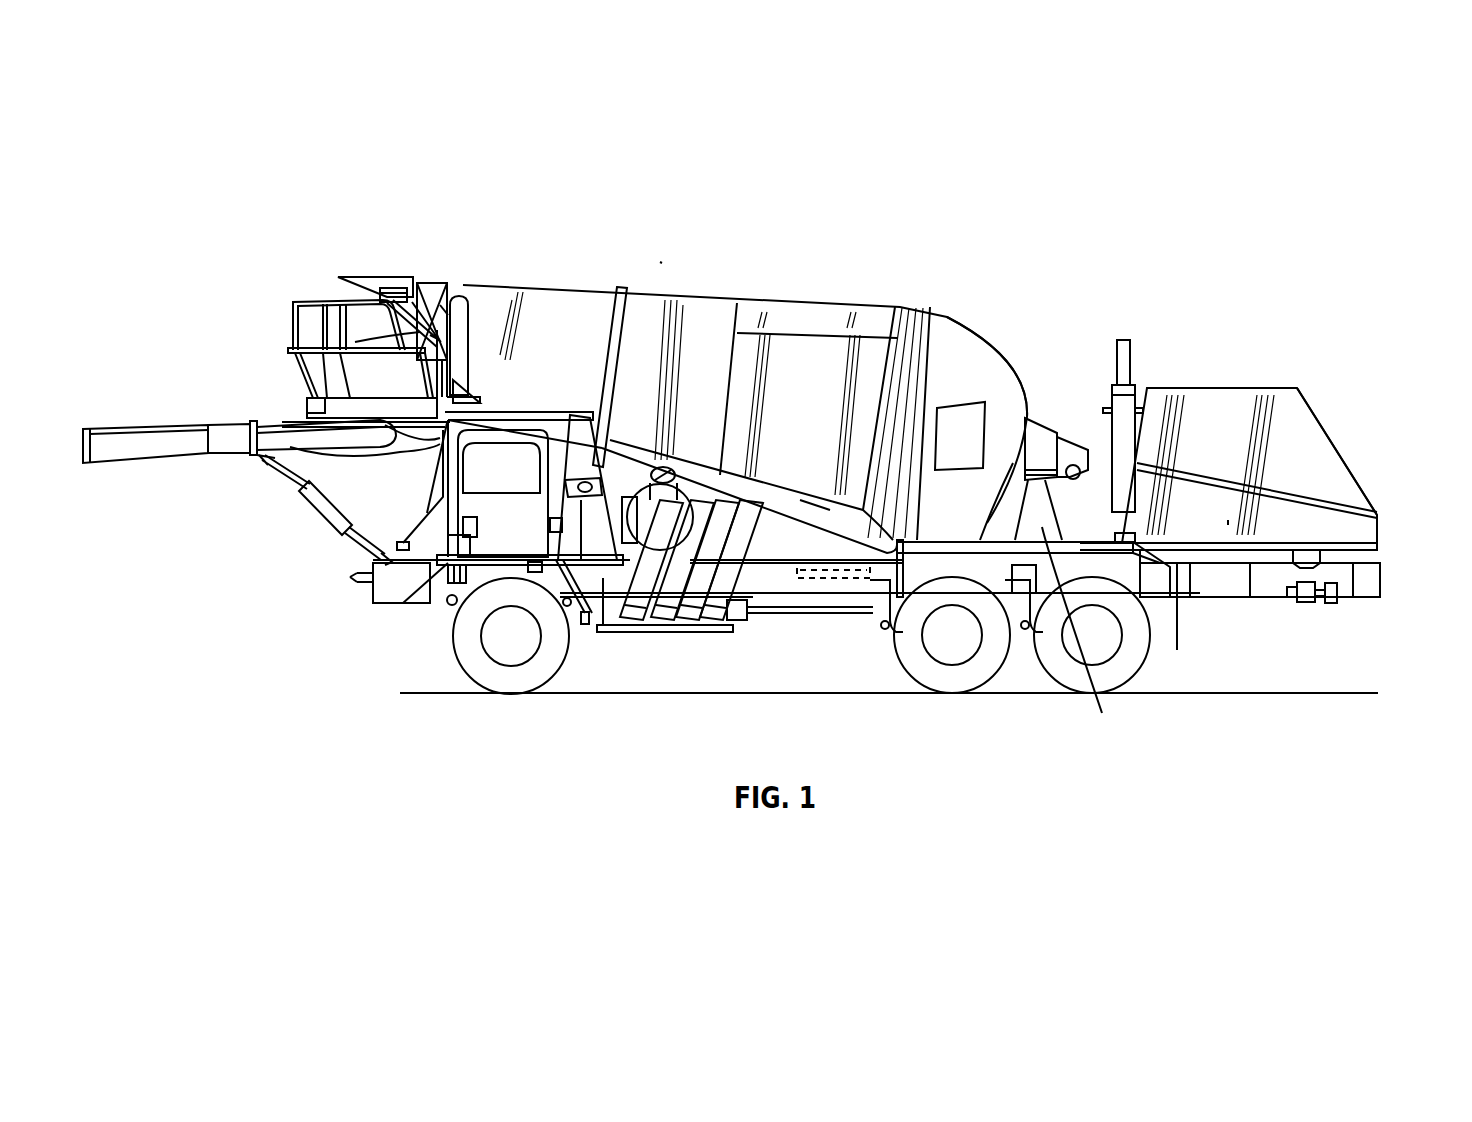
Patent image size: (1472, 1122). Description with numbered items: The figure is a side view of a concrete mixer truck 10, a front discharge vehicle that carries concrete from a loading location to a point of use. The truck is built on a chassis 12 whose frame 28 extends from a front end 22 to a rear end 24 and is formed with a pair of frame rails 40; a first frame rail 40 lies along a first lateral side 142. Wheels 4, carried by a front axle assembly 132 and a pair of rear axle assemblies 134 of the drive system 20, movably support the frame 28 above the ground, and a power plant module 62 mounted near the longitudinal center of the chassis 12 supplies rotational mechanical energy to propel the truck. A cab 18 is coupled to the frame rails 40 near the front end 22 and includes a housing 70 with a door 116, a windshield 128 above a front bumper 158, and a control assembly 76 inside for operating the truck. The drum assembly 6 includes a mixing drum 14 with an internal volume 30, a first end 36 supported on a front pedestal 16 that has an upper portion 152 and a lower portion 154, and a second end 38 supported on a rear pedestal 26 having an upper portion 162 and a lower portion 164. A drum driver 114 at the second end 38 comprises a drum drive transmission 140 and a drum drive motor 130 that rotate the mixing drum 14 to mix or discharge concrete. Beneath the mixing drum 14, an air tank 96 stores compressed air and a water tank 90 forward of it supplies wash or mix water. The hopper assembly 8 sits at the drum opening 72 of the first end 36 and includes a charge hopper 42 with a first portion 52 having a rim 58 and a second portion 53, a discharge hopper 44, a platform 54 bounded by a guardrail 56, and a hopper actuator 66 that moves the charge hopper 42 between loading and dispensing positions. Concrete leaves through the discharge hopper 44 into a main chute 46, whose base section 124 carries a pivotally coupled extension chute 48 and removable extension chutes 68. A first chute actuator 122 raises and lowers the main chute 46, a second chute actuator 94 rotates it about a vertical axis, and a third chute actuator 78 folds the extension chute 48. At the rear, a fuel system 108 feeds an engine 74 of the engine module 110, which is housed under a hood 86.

The wheels 4 is at (475, 655).
The drum assembly 6 is at (660, 262).
The hopper assembly 8 is at (290, 278).
The concrete mixer truck 10 is at (942, 280).
The chassis 12 is at (860, 597).
The mixing drum 14 is at (718, 302).
The front pedestal 16 is at (602, 450).
The cab 18 is at (455, 532).
The drive system 20 is at (745, 622).
The front end 22 is at (355, 580).
The rear end 24 is at (1385, 572).
The rear pedestal 26 is at (1081, 633).
The frame 28 is at (830, 590).
The internal volume 30 is at (797, 352).
The first end 36 is at (446, 278).
The second end 38 is at (1023, 368).
The frame rails 40 is at (1193, 583).
The charge hopper 42 is at (410, 278).
The discharge hopper 44 is at (300, 350).
The main chute 46 is at (305, 448).
The extension chute 48 is at (141, 452).
The first portion 52 is at (390, 286).
The second portion 53 is at (413, 333).
The platform 54 is at (322, 412).
The guardrail 56 is at (300, 366).
The rim 58 is at (363, 278).
The power plant module 62 is at (832, 562).
The hopper actuator 66 is at (445, 310).
The removable extension chutes 68 is at (637, 620).
The housing 70 is at (553, 465).
The drum opening 72 is at (435, 333).
The engine 74 is at (1228, 522).
The control assembly 76 is at (442, 446).
The third chute actuator 78 is at (225, 426).
The hood 86 is at (1335, 475).
The water tank 90 is at (665, 490).
The second chute actuator 94 is at (370, 450).
The air tank 96 is at (798, 500).
The fuel system 108 is at (1122, 336).
The engine module 110 is at (1307, 440).
The drum driver 114 is at (1065, 430).
The door 116 is at (502, 517).
The first chute actuator 122 is at (305, 516).
The base section 124 is at (278, 460).
The windshield 128 is at (418, 514).
The drum drive motor 130 is at (1140, 465).
The front axle assembly 132 is at (522, 697).
The rear axle assemblies 134 is at (905, 685).
The drum drive transmission 140 is at (1023, 432).
The first lateral side 142 is at (1270, 580).
The upper portion 152 is at (600, 610).
The lower portion 154 is at (524, 420).
The front bumper 158 is at (385, 597).
The upper portion 162 is at (1012, 480).
The lower portion 164 is at (1046, 512).